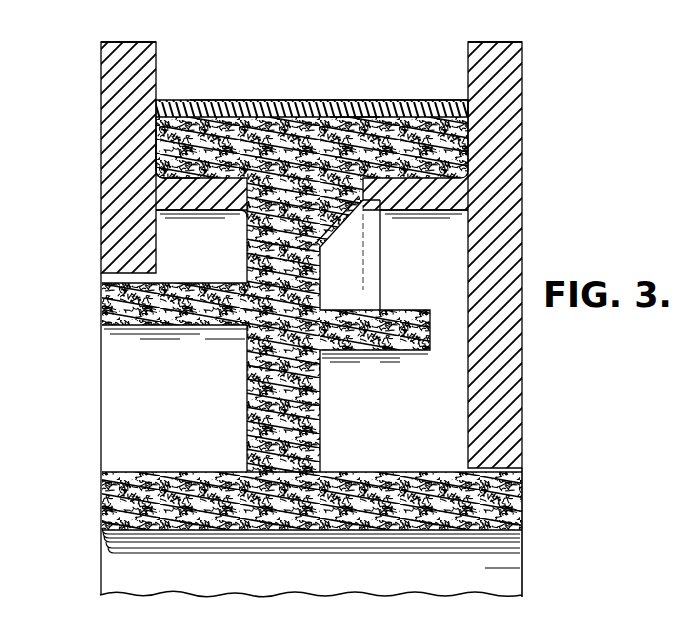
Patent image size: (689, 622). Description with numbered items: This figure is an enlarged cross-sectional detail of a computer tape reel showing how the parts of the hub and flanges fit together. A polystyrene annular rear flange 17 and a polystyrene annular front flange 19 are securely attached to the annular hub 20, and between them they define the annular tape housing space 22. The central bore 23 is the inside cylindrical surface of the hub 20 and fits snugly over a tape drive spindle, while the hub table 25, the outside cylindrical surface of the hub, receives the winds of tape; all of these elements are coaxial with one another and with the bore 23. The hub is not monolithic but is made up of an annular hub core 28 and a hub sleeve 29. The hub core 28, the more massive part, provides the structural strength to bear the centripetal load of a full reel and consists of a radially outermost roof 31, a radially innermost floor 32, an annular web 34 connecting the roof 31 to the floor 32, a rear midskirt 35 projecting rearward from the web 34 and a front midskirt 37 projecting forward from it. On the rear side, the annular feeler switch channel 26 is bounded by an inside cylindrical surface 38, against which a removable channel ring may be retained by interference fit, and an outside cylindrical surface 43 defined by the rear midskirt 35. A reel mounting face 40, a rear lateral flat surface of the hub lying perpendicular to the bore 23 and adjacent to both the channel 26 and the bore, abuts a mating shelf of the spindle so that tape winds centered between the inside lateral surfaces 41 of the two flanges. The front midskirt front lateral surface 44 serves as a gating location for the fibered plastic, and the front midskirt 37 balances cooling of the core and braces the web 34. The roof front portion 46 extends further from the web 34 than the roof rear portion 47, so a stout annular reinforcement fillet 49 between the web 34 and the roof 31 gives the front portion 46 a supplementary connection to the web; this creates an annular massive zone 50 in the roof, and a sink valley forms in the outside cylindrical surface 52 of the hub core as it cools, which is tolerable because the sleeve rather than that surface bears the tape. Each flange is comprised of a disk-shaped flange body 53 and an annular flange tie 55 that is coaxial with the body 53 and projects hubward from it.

The rear flange 17 is at (98, 119).
The front flange 19 is at (529, 79).
The hub 20 is at (526, 586).
The tape housing space 22 is at (312, 266).
The central bore 23 is at (508, 566).
The hub table 25 is at (160, 100).
The feeler switch channel 26 is at (138, 412).
The hub core 28 is at (348, 474).
The hub sleeve 29 is at (226, 100).
The roof 31 is at (443, 103).
The floor 32 is at (507, 503).
The web 34 is at (246, 266).
The rear midskirt 35 is at (108, 312).
The front midskirt 37 is at (342, 354).
The inside cylindrical surface of the channel 38 is at (130, 476).
The reel mounting face 40 is at (104, 508).
The inside lateral surfaces 41 is at (160, 48).
The outside cylindrical surface of the channel 43 is at (146, 330).
The front midskirt front lateral surface 44 is at (432, 320).
The roof front portion 46 is at (360, 198).
The roof rear portion 47 is at (158, 156).
The reinforcement fillet 49 is at (342, 238).
The massive zone 50 is at (350, 118).
The outside cylindrical surface of the hub core 52 is at (338, 100).
The flange body 53 is at (118, 196).
The flange tie 55 is at (165, 216).